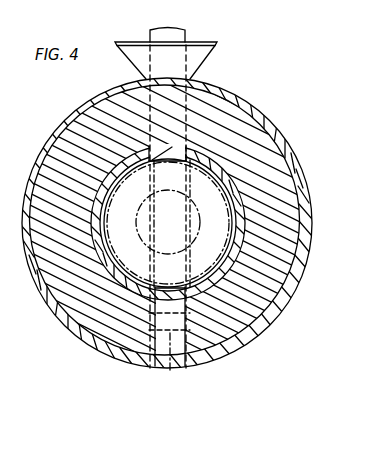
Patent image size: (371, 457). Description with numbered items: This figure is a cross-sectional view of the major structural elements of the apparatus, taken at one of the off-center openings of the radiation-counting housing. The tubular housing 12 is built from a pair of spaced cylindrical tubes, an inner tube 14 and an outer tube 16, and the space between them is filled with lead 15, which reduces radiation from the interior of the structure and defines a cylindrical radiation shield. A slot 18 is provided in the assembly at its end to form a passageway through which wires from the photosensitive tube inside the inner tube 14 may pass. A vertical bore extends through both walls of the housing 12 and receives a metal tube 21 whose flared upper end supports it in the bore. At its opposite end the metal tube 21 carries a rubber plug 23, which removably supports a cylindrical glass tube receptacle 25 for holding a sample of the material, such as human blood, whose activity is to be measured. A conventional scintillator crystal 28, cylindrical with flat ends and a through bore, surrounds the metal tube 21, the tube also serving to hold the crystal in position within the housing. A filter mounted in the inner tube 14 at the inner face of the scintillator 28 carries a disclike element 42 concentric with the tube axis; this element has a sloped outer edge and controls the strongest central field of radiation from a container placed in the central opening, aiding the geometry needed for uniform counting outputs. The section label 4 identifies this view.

The section indicator 4 is at (114, 8).
The tubular housing 12 is at (86, 103).
The inner tube 14 is at (233, 194).
The lead 15 is at (262, 160).
The outer tube 16 is at (243, 104).
The slot 18 is at (160, 345).
The metal tube 21 is at (196, 57).
The rubber plug 23 is at (172, 366).
The cylindrical glass tube receptacle 25 is at (180, 34).
The scintillator crystal 28 is at (200, 260).
The disclike element 42 is at (142, 243).